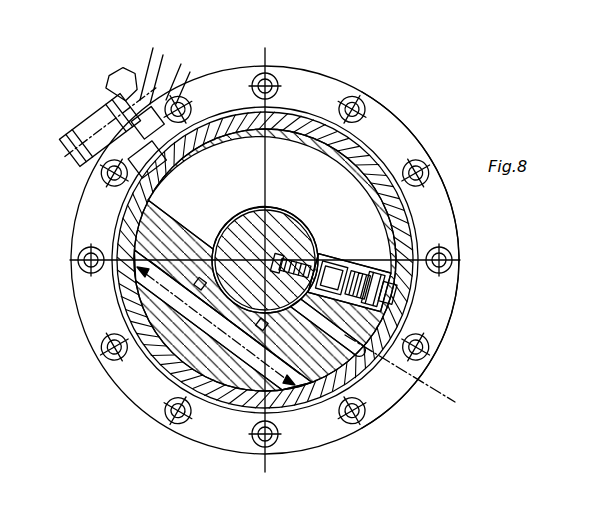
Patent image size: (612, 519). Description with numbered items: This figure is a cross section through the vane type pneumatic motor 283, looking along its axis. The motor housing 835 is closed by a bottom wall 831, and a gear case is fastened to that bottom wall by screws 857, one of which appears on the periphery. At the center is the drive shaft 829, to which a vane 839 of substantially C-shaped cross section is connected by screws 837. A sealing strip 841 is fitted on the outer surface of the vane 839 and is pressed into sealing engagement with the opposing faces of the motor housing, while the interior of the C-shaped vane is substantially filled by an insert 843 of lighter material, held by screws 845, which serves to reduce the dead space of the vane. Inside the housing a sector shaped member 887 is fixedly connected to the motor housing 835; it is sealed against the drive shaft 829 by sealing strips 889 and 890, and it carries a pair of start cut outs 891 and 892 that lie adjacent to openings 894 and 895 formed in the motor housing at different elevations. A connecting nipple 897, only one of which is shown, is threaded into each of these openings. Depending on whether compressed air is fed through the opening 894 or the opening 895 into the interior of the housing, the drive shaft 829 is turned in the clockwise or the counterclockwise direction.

The vane type pneumatic motor 283 is at (398, 112).
The drive shaft 829 is at (281, 212).
The bottom wall 831 is at (390, 400).
The motor housing 835 is at (392, 217).
The screws 837 is at (312, 241).
The vane 839 is at (340, 257).
The sealing strip 841 is at (383, 288).
The insert 843 is at (372, 265).
The screws 845 is at (359, 249).
The screws 857 is at (432, 357).
The sector shaped member 887 is at (300, 376).
The sealing strip 889 is at (232, 352).
The sealing strip 890 is at (200, 288).
The start cut out 891 is at (152, 210).
The start cut out 892 is at (363, 323).
The opening 894 is at (162, 173).
The opening 895 is at (363, 357).
The connecting nipple 897 is at (88, 108).